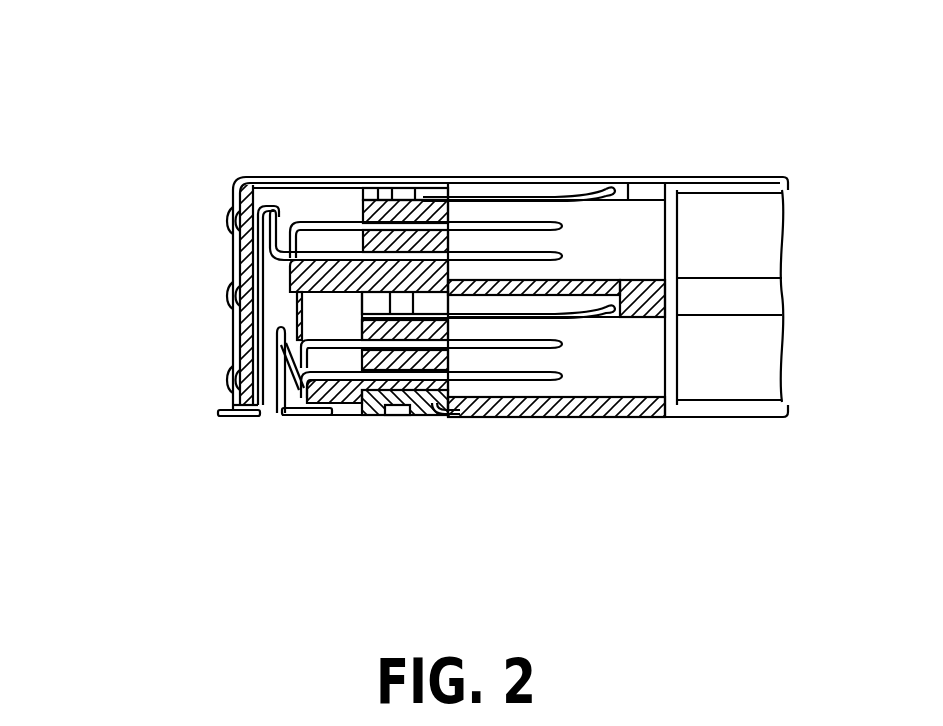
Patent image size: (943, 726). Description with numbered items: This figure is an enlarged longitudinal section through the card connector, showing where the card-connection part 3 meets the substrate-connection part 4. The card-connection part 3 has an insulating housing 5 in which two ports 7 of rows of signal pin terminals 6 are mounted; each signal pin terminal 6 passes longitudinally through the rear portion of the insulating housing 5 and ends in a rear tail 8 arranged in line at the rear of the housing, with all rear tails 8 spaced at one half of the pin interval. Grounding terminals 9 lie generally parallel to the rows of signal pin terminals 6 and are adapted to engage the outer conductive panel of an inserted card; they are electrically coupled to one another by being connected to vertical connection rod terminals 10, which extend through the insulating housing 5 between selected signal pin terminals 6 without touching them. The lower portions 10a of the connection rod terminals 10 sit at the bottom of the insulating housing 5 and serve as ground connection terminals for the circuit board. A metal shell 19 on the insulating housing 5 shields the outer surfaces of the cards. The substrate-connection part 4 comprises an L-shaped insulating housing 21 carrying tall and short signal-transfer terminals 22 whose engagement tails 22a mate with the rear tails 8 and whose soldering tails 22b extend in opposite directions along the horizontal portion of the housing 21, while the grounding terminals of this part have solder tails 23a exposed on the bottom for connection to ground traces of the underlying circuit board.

The card-connection part 3 is at (651, 172).
The substrate-connection part 4 is at (232, 397).
The insulating housing 5 is at (380, 203).
The signal pin terminal 6 is at (500, 222).
The port 7 is at (586, 254).
The rear tail 8 is at (298, 205).
The grounding terminal 9 is at (472, 192).
The connection rod terminal 10 is at (404, 192).
The lower portion of connection rod terminal 10a is at (407, 417).
The metal shell 19 is at (583, 183).
The L-shaped insulating housing 21 is at (248, 290).
The signal-transfer terminal 22 is at (236, 302).
The engagement tail 22a is at (235, 218).
The soldering tail 22b is at (227, 420).
The solder tail 23a is at (452, 417).